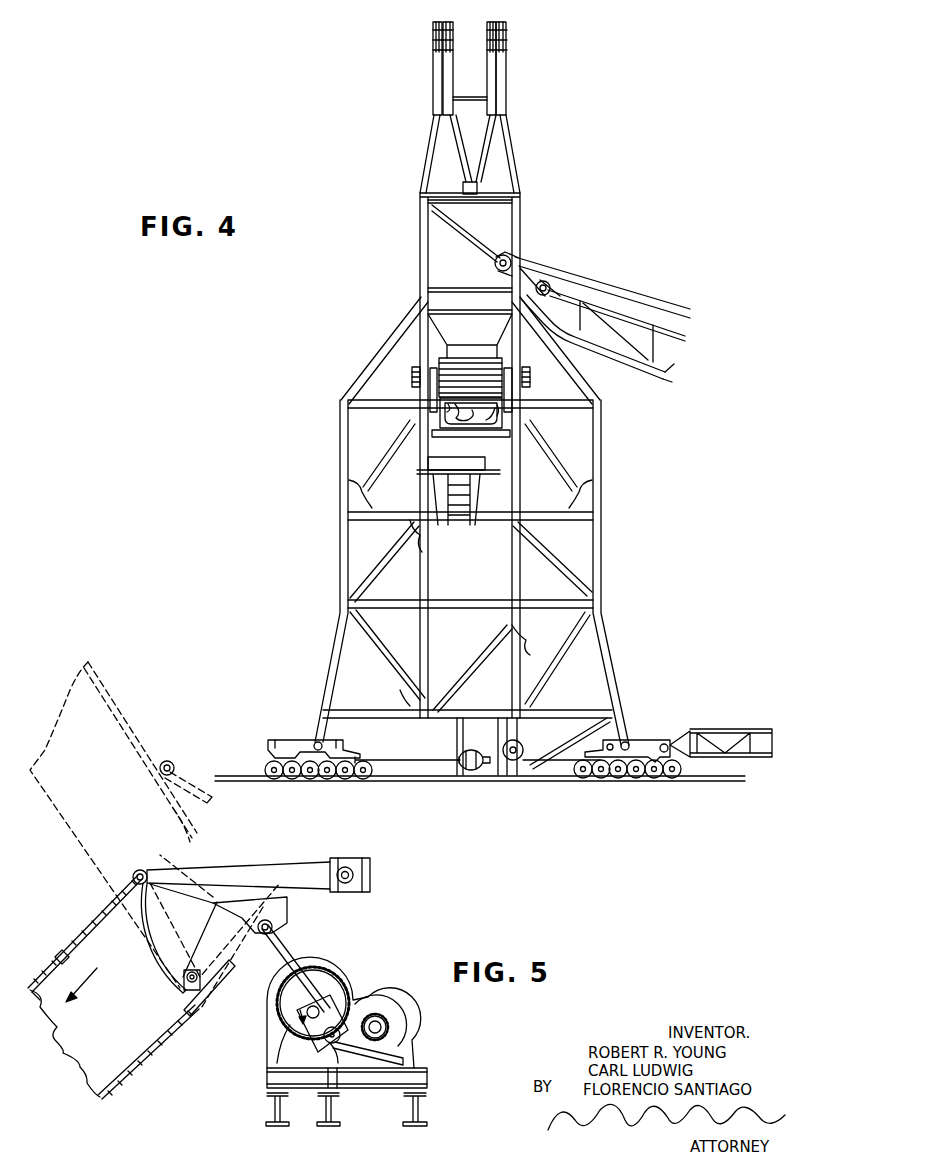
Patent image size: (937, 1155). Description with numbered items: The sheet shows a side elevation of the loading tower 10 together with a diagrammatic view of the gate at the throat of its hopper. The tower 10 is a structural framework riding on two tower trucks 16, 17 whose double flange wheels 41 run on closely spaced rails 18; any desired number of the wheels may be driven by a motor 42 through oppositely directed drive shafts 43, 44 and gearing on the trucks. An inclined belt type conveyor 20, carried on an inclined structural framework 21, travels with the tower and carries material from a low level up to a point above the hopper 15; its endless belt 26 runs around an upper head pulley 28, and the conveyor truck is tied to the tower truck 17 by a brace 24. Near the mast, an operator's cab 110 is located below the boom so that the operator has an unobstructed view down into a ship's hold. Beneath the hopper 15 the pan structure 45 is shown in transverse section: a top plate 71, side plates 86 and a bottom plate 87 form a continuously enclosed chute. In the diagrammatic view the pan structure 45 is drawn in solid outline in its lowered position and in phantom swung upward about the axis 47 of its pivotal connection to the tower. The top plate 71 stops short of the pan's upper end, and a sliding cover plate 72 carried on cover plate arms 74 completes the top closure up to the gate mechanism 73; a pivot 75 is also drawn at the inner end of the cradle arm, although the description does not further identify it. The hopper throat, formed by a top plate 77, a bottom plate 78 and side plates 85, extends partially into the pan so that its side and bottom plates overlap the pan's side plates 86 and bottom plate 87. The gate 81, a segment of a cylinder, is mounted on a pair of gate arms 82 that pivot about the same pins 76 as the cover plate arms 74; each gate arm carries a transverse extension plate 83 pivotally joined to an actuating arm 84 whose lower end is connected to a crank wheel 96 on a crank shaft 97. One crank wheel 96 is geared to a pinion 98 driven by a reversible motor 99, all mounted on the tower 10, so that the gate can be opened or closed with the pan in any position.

In FIG. 4, the tower 10 is at (332, 434).
In FIG. 5, the tower 10 is at (440, 1083).
In FIG. 4, the hopper 15 is at (445, 272).
In FIG. 4, the tower truck 16 is at (292, 738).
In FIG. 4, the tower truck 17 is at (648, 740).
In FIG. 4, the rails 18 is at (735, 785).
In FIG. 4, the inclined belt type conveyor 20 is at (675, 296).
In FIG. 4, the inclined structural framework 21 is at (655, 378).
In FIG. 4, the brace 24 is at (725, 730).
In FIG. 4, the endless belt 26 is at (603, 283).
In FIG. 4, the upper head pulley 28 is at (512, 262).
In FIG. 4, the wheels 41 is at (340, 780).
In FIG. 4, the motor 42 is at (487, 770).
In FIG. 4, the drive shaft 43 is at (425, 768).
In FIG. 4, the drive shaft 44 is at (560, 765).
In FIG. 5, the pan structure 45 is at (65, 686).
In FIG. 5, the axis 47 is at (193, 1008).
In FIG. 4, the top plate 71 is at (500, 410).
In FIG. 5, the top plate 71 is at (48, 967).
In FIG. 5, the sliding cover plate 72 is at (92, 937).
In FIG. 5, the gate mechanism 73 is at (310, 942).
In FIG. 5, the cover plate arms 74 is at (190, 768).
In FIG. 5, the pivot 75 is at (137, 873).
In FIG. 5, the pins 76 is at (357, 876).
In FIG. 5, the top plate 77 is at (169, 823).
In FIG. 5, the bottom plate 78 is at (242, 990).
In FIG. 5, the gate 81 is at (156, 955).
In FIG. 5, the gate arms 82 is at (272, 866).
In FIG. 5, the transverse extension plate 83 is at (279, 910).
In FIG. 5, the actuating arm 84 is at (297, 957).
In FIG. 5, the side plates 85 is at (260, 842).
In FIG. 4, the side plates 86 is at (447, 412).
In FIG. 5, the side plates 86 is at (85, 1048).
In FIG. 4, the bottom plate 87 is at (448, 425).
In FIG. 5, the bottom plate 87 is at (153, 1047).
In FIG. 5, the crank wheels 96 is at (362, 978).
In FIG. 5, the crank shaft 97 is at (390, 994).
In FIG. 5, the pinion 98 is at (388, 1028).
In FIG. 5, the reversible motor 99 is at (406, 1050).
In FIG. 4, the operator's cab 110 is at (462, 500).